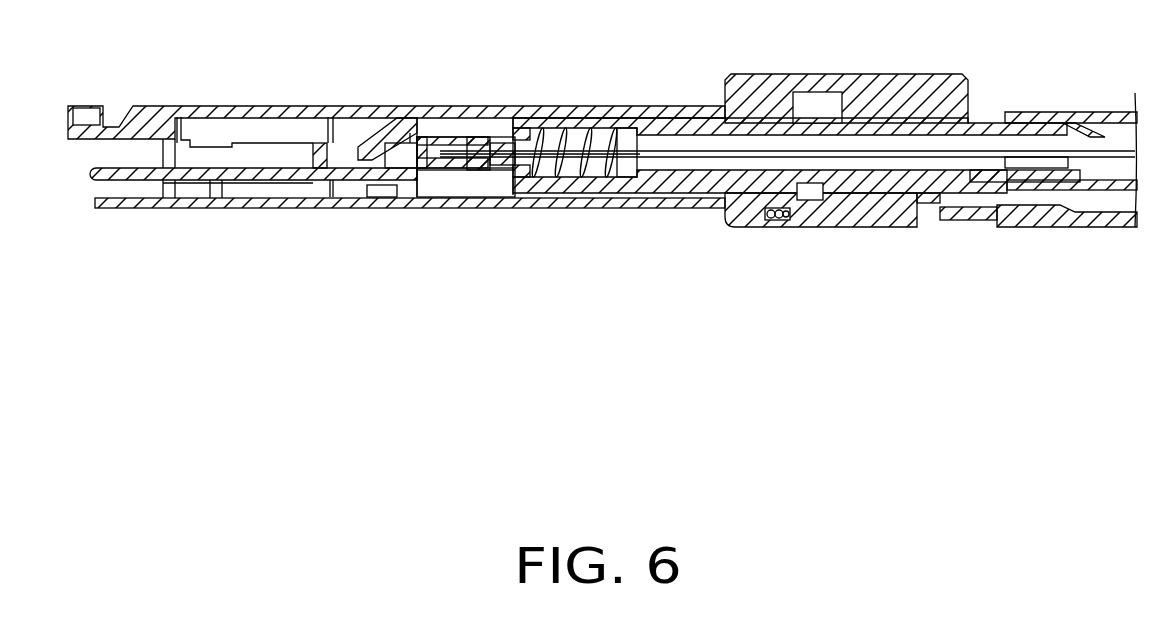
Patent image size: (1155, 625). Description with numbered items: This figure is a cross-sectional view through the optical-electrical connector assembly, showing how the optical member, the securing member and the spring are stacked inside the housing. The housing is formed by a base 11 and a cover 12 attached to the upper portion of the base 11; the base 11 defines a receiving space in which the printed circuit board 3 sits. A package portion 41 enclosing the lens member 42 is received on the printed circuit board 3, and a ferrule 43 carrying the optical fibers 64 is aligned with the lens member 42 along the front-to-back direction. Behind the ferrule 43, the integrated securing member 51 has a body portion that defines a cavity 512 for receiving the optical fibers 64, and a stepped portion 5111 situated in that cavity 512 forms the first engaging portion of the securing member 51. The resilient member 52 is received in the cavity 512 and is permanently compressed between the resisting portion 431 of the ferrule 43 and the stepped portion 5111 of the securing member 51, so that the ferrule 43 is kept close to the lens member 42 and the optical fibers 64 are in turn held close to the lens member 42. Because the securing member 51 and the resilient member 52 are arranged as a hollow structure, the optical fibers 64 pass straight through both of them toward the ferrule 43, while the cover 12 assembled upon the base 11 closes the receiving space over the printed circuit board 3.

The cover 12 is at (155, 125).
The base 11 is at (192, 207).
The printed circuit board 3 is at (92, 172).
The package portion 41 is at (400, 120).
The lens member 42 is at (405, 152).
The ferrule 43 is at (437, 162).
The resisting portion 431 is at (540, 157).
The integrated securing member 51 is at (560, 193).
The cavity 512 is at (528, 130).
The stepped portion 5111 is at (614, 123).
The resilient member 52 is at (617, 183).
The optical fibers 64 is at (708, 150).